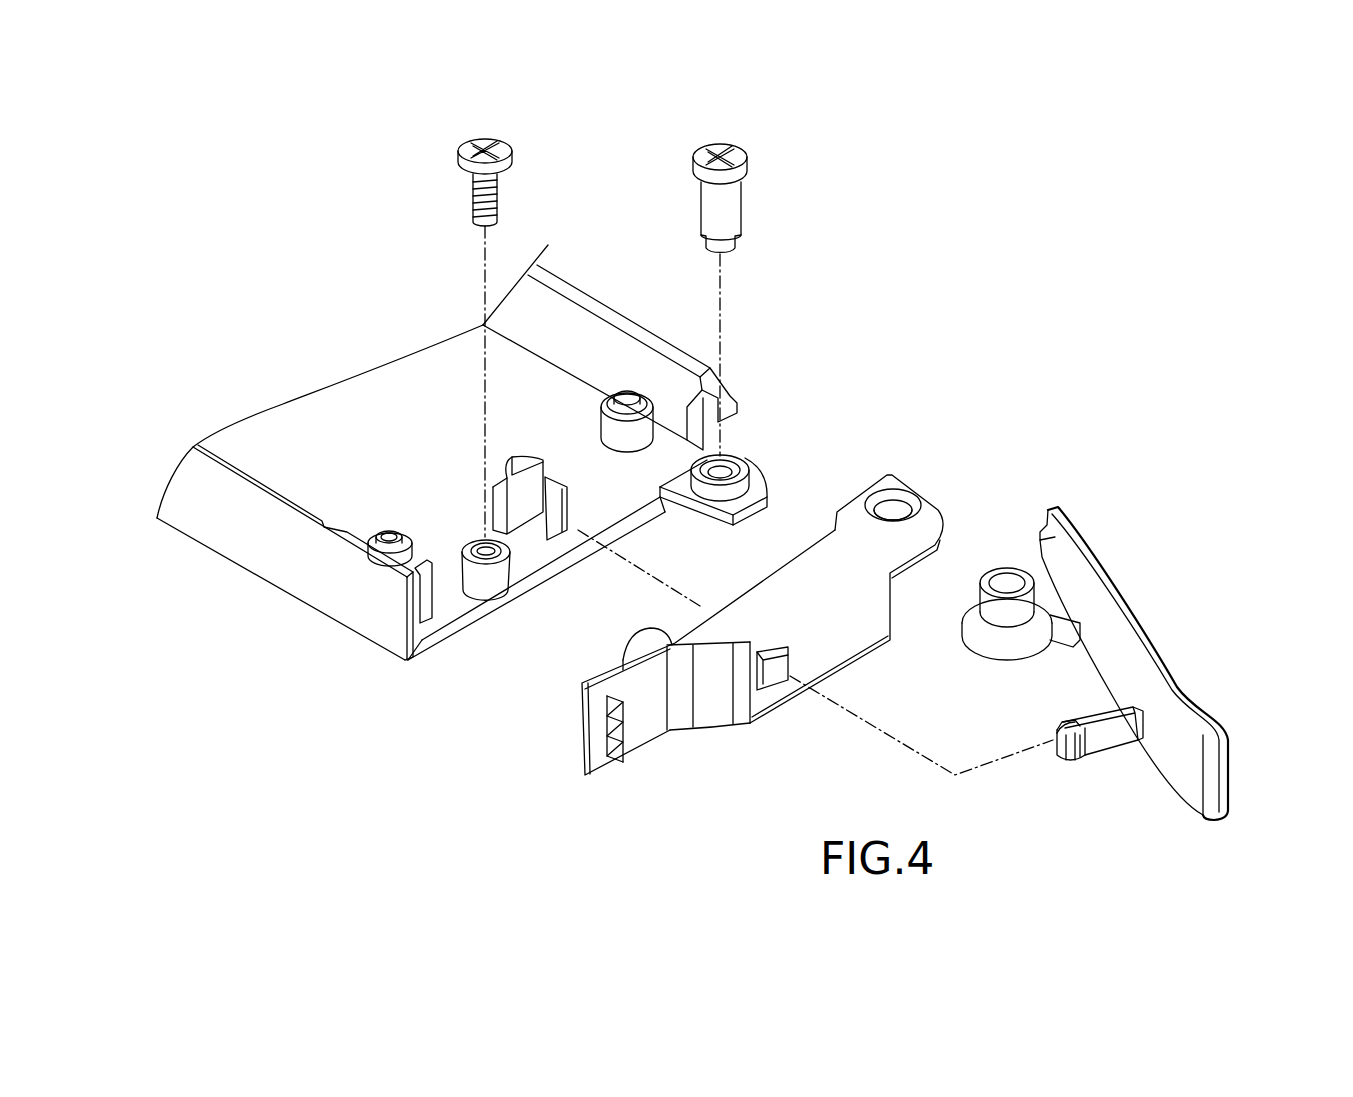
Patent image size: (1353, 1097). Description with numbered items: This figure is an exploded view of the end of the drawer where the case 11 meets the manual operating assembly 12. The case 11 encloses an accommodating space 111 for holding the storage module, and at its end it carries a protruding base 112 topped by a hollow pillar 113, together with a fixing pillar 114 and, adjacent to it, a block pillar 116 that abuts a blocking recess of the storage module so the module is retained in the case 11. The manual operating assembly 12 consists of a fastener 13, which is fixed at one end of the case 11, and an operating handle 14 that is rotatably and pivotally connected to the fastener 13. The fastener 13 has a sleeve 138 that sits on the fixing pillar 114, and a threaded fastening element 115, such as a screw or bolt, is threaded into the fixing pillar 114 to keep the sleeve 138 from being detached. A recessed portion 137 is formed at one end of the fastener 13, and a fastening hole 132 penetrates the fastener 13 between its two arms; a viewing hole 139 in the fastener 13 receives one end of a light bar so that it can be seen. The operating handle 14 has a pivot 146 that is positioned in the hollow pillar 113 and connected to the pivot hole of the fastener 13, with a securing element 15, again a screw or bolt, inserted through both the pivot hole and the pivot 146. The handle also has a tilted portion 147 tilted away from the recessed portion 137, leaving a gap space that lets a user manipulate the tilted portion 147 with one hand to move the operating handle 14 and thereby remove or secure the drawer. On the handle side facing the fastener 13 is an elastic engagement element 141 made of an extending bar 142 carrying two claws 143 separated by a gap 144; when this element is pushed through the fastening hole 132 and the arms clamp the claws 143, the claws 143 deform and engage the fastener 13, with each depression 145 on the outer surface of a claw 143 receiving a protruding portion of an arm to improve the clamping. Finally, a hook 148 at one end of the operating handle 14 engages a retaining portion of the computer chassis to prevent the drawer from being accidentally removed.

The case 11 is at (307, 600).
The accommodating space 111 is at (535, 395).
The protruding base 112 is at (757, 483).
The hollow pillar 113 is at (747, 470).
The fixing pillar 114 is at (483, 557).
The threaded fastening element 115 is at (460, 152).
The block pillar 116 is at (515, 513).
The manual operating assembly 12 is at (1170, 452).
The fastener 13 is at (920, 487).
The fastening hole 132 is at (763, 677).
The recessed portion 137 is at (668, 745).
The sleeve 138 is at (637, 647).
The viewing hole 139 is at (610, 755).
The operating handle 14 is at (1103, 557).
The elastic engagement element 141 is at (1058, 775).
The extending bar 142 is at (1113, 742).
The claws 143 is at (1072, 747).
The gap 144 is at (1063, 728).
The depression 145 is at (1078, 748).
The pivot 146 is at (1007, 583).
The tilted portion 147 is at (1218, 772).
The hook 148 is at (1043, 550).
The securing element 15 is at (722, 203).